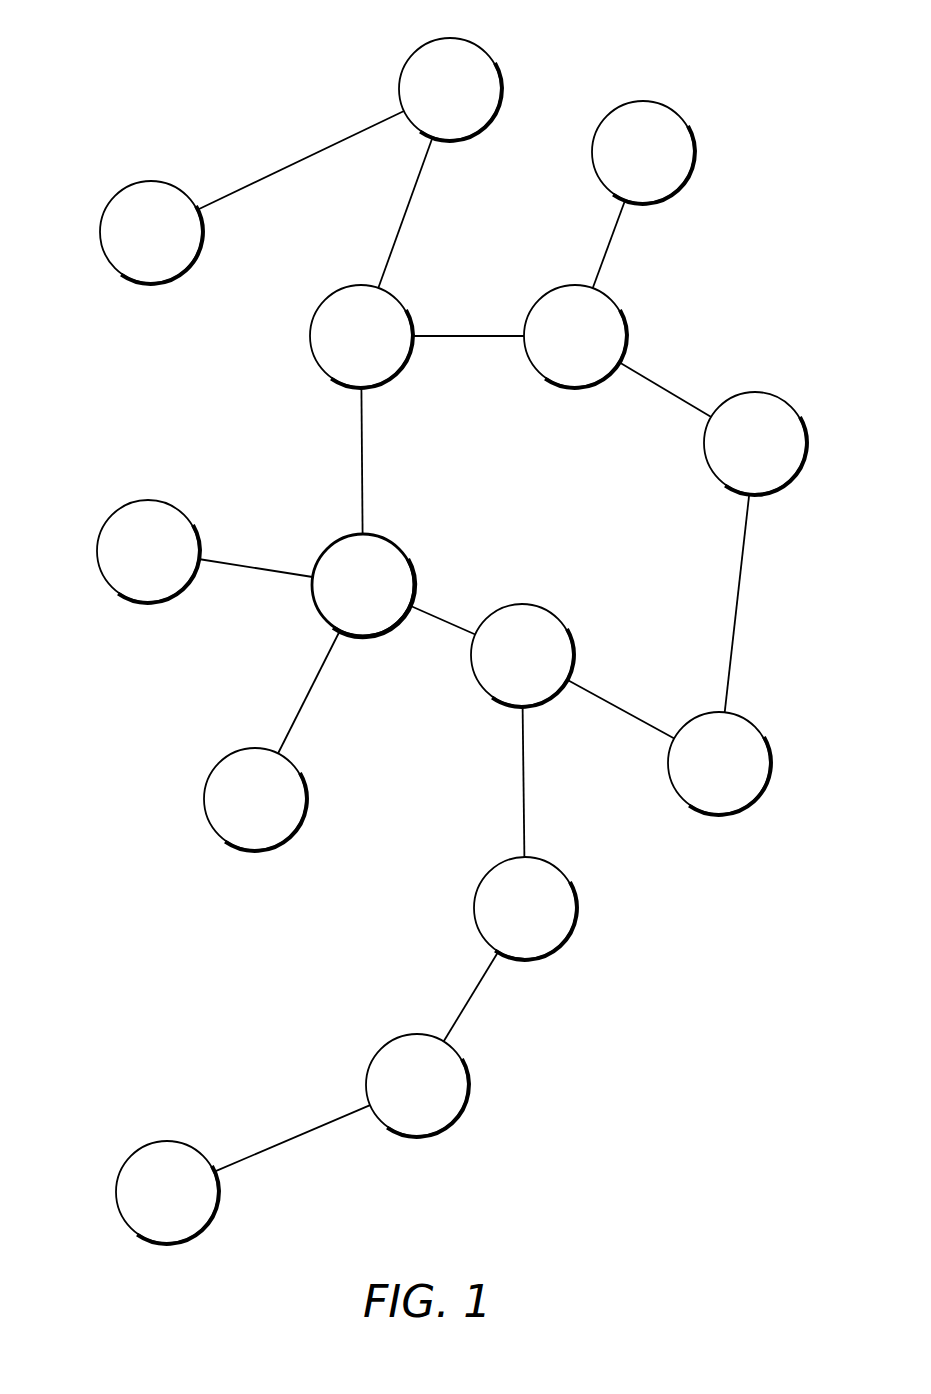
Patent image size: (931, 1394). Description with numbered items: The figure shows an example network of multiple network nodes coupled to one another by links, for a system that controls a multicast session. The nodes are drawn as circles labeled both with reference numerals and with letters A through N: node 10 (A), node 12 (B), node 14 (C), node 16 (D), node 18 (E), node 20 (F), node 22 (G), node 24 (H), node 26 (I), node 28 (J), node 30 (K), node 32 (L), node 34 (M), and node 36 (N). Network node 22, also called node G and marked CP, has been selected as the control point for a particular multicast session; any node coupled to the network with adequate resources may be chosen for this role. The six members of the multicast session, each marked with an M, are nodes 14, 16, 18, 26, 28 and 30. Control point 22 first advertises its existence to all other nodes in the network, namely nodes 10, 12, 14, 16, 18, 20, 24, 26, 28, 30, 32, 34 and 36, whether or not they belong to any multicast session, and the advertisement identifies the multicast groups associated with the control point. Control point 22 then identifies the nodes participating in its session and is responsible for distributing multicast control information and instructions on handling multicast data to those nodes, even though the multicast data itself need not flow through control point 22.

The network node 10 is at (487, 50).
The network node 12 is at (150, 180).
The network node 14 is at (397, 298).
The network node 16 is at (614, 301).
The network node 18 is at (645, 100).
The network node 20 is at (789, 402).
The control point 22 is at (398, 545).
The network node 24 is at (122, 505).
The network node 26 is at (293, 762).
The network node 28 is at (548, 610).
The network node 30 is at (576, 904).
The network node 32 is at (464, 1100).
The network node 34 is at (162, 1139).
The network node 36 is at (753, 724).